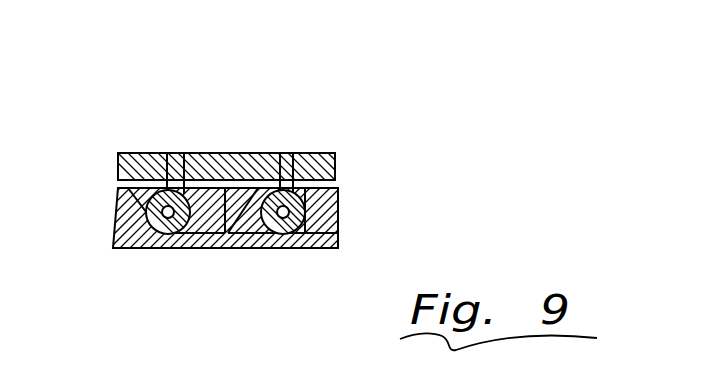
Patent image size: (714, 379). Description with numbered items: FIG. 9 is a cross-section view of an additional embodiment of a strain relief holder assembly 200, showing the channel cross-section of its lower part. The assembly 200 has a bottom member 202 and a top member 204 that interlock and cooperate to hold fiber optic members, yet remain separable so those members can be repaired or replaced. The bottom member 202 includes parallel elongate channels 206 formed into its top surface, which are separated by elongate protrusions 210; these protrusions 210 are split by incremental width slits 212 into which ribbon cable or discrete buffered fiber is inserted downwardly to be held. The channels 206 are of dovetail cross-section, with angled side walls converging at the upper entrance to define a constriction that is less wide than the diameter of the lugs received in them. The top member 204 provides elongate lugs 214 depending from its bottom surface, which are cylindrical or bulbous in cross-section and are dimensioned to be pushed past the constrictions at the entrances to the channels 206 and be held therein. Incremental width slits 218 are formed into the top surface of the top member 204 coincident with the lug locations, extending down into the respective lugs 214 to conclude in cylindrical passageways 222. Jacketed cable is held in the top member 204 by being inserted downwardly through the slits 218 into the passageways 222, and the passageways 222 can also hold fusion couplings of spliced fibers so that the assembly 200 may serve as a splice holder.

The strain relief holder assembly 200 is at (114, 137).
The bottom member 202 is at (125, 226).
The top member 204 is at (312, 155).
The elongate channels 206 is at (313, 237).
The elongate protrusions 210 is at (208, 200).
The incremental width slits 212 is at (232, 228).
The elongate lugs 214 is at (300, 208).
The incremental width slits 218 is at (186, 155).
The cylindrical passageways 222 is at (320, 222).